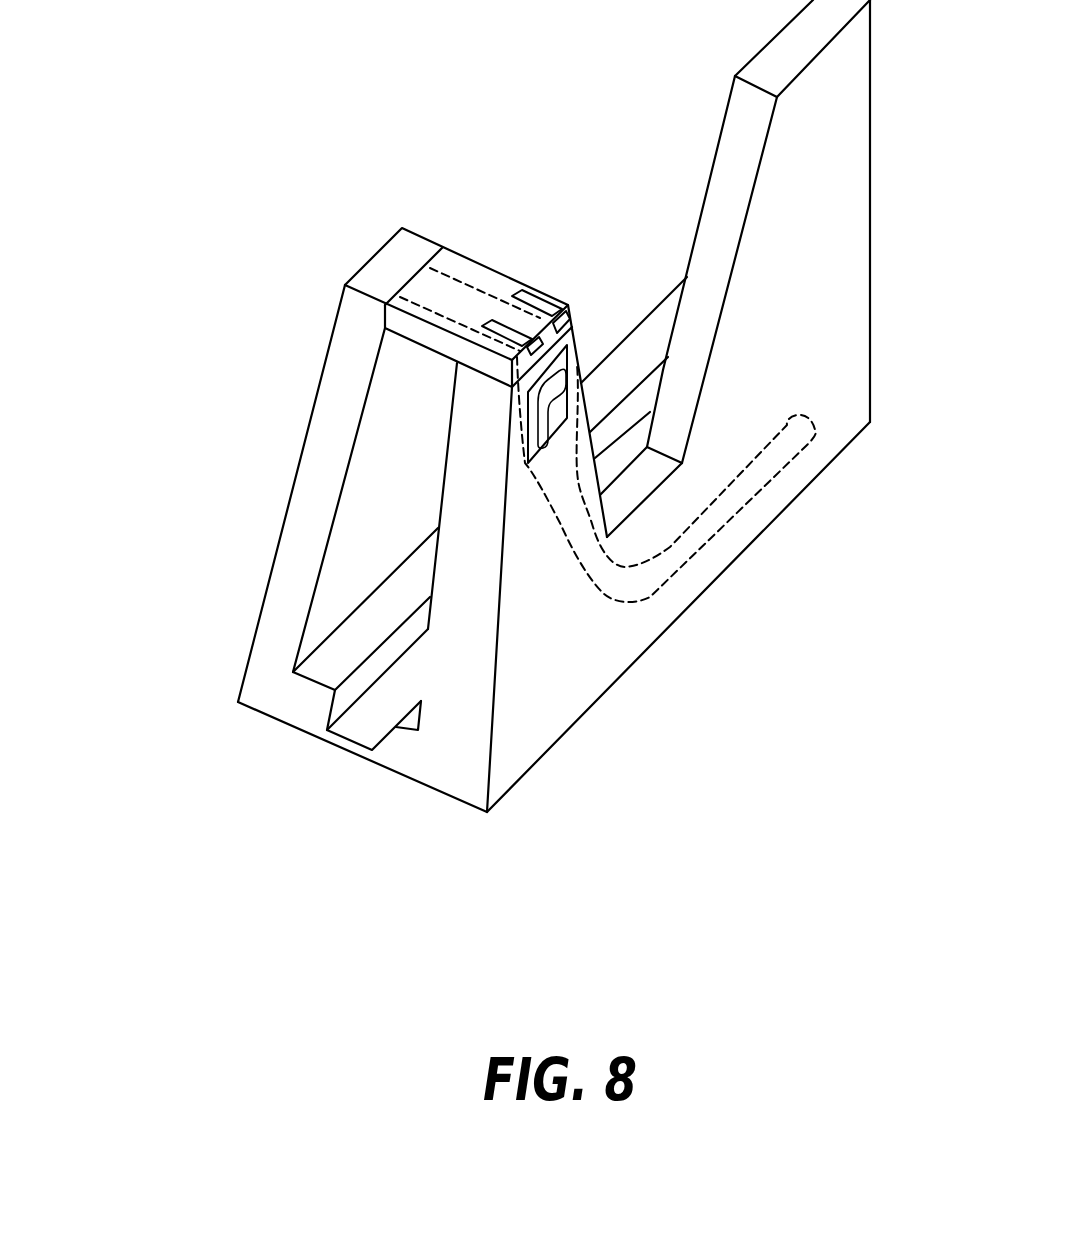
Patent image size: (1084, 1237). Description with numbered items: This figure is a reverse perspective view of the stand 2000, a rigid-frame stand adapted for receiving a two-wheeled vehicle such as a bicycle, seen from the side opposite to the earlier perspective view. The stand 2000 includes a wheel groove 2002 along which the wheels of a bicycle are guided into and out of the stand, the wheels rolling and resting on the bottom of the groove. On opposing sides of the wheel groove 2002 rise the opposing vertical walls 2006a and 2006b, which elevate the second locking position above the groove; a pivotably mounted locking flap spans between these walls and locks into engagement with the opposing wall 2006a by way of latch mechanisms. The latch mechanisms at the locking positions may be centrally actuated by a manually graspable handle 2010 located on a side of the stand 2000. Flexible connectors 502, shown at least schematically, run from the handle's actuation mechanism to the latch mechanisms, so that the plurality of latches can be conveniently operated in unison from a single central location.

The stand 2000 is at (272, 232).
The flexible connectors 502 is at (473, 292).
The vertical wall 2006a is at (285, 523).
The vertical wall 2006b is at (590, 643).
The wheel groove 2002 is at (347, 733).
The handle 2010 is at (605, 403).